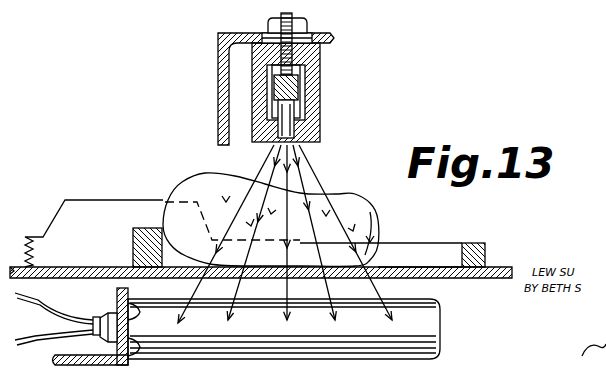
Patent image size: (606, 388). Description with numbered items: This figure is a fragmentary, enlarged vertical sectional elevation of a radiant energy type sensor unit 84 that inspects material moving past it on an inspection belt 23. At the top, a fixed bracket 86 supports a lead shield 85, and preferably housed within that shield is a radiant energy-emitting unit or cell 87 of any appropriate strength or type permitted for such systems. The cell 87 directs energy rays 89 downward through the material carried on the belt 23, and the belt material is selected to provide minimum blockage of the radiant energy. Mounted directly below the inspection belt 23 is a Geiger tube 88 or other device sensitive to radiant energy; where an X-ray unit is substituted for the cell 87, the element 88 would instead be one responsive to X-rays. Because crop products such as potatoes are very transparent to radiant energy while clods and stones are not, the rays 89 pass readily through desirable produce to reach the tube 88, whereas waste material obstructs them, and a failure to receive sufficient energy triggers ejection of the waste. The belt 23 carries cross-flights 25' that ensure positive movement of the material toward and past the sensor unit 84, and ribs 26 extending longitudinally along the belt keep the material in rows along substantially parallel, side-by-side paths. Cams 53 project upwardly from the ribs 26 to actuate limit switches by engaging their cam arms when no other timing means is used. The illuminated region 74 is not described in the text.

The fixed bracket 86 is at (219, 63).
The radiant energy type sensor unit 84 is at (325, 110).
The lead shield 85 is at (318, 82).
The radiant energy-emitting unit or cell 87 is at (296, 121).
The energy rays 89 is at (322, 181).
The illuminated area 74 is at (378, 208).
The inspection belt 23 is at (440, 283).
The cross-flights 25' is at (325, 210).
The ribs 26 is at (413, 260).
The cams 53 is at (80, 210).
The Geiger tube 88 is at (432, 336).